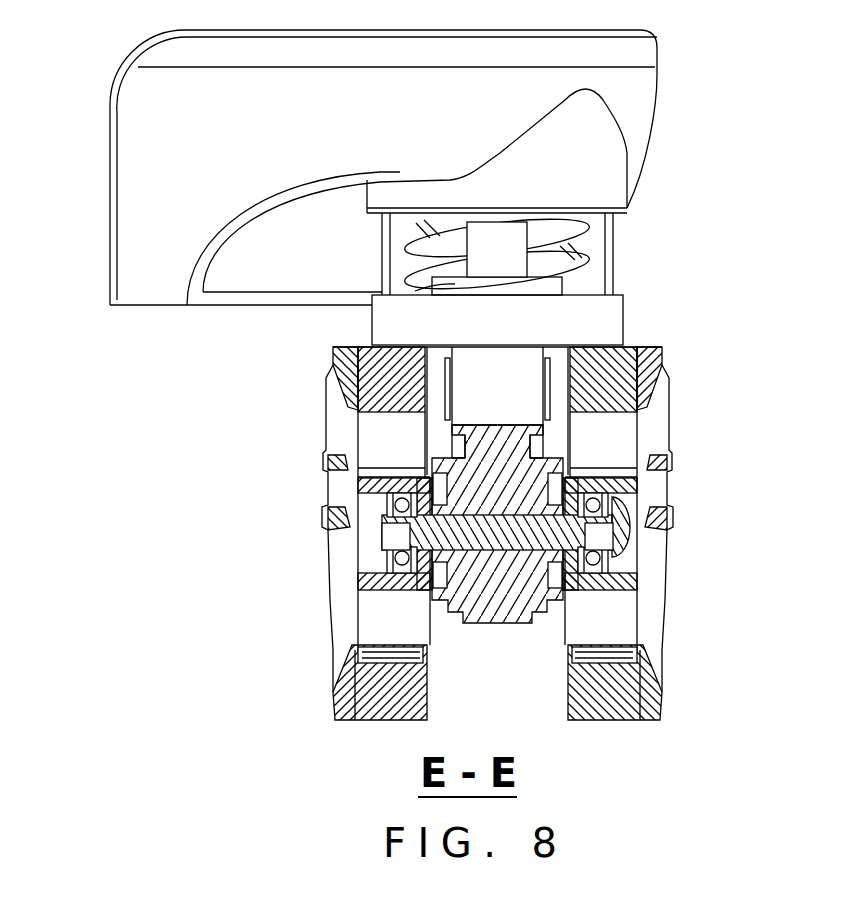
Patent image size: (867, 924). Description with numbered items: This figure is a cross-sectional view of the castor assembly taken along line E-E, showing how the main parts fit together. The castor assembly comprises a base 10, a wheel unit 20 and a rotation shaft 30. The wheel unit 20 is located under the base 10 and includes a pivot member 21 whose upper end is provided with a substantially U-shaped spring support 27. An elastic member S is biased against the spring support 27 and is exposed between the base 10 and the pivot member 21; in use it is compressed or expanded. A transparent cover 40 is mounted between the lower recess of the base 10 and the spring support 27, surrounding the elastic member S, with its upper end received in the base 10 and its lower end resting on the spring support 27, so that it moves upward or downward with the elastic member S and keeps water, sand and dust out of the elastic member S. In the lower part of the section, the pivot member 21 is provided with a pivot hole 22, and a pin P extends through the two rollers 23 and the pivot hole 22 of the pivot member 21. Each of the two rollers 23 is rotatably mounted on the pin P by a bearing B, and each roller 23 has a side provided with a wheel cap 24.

The base 10 is at (128, 185).
The rotation shaft 30 is at (497, 238).
The elastic member S is at (406, 251).
The transparent cover 40 is at (608, 237).
The spring support 27 is at (392, 325).
The wheel unit 20 is at (543, 360).
The pivot member 21 is at (502, 607).
The pivot hole 22 is at (470, 560).
The pin P is at (612, 530).
The bearing B is at (593, 565).
The wheel cap 24 is at (683, 625).
The rollers 23 is at (606, 703).